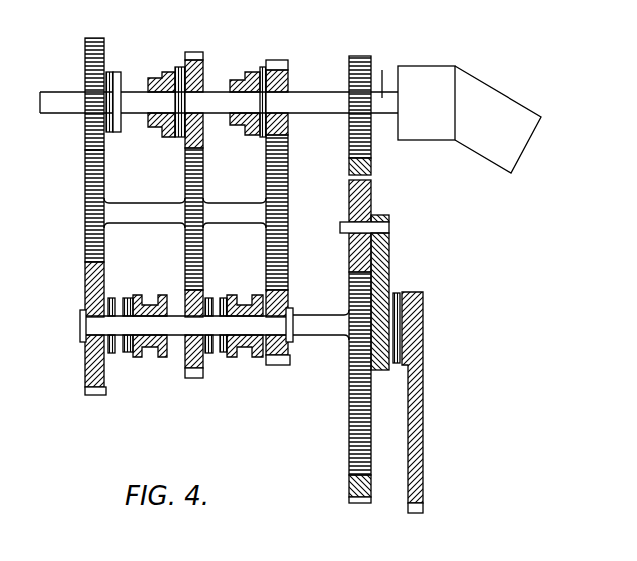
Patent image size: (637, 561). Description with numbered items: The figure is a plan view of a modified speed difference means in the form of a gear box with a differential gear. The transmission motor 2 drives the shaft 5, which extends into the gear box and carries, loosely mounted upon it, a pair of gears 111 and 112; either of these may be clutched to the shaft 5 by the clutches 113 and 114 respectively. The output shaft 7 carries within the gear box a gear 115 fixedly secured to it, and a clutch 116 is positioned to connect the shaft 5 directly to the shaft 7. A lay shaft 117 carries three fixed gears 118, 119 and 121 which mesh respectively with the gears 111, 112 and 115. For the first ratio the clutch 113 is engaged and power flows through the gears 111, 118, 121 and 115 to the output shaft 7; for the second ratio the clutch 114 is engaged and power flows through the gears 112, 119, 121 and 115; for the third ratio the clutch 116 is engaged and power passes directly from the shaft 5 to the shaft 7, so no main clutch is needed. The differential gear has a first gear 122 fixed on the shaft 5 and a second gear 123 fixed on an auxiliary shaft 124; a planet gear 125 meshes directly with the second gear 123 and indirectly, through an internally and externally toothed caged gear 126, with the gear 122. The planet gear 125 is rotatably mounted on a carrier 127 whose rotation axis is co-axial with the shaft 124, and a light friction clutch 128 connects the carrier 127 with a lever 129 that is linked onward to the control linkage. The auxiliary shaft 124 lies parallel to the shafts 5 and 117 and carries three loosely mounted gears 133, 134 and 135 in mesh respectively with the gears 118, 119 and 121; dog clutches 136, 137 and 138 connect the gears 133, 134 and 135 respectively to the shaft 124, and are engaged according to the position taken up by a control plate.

The transmission motor 2 is at (482, 90).
The shaft 5 is at (382, 74).
The output shaft 7 is at (72, 90).
The gear 111 is at (283, 62).
The gear 112 is at (199, 62).
The clutch 113 is at (262, 72).
The clutch 114 is at (178, 70).
The gear 115 is at (104, 50).
The clutch 116 is at (110, 74).
The lay shaft 117 is at (229, 215).
The gear 118 is at (290, 194).
The gear 119 is at (203, 238).
The gear 121 is at (105, 238).
The first gear 122 is at (349, 76).
The second gear 123 is at (350, 350).
The auxiliary shaft 124 is at (327, 323).
The planet gear 125 is at (365, 194).
The caged gear 126 is at (350, 488).
The carrier 127 is at (390, 252).
The light friction clutch 128 is at (398, 305).
The lever 129 is at (425, 395).
The gear 133 is at (282, 364).
The gear 134 is at (188, 379).
The gear 135 is at (102, 388).
The dog clutch 136 is at (263, 295).
The dog clutch 137 is at (208, 297).
The dog clutch 138 is at (111, 298).